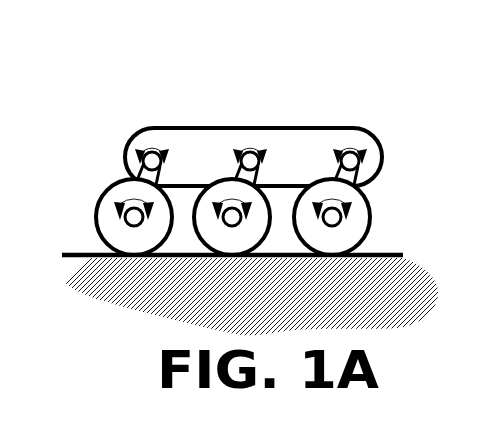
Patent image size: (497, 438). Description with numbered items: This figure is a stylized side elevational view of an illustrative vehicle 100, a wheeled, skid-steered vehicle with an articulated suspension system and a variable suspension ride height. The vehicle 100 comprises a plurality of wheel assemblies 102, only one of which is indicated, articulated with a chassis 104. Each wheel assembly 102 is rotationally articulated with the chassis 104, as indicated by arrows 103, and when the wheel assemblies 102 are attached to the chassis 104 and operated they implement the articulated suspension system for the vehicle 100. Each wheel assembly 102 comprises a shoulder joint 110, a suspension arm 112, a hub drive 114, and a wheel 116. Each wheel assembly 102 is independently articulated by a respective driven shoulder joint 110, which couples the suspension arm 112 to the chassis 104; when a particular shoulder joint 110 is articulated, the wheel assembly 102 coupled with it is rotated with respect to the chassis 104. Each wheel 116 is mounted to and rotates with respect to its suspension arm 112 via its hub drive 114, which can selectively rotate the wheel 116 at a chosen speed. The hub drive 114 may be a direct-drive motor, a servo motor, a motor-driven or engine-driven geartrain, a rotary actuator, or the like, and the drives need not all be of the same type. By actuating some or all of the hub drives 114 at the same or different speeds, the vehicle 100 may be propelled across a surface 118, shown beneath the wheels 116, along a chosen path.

The vehicle 100 is at (127, 27).
The wheel assembly 102 is at (88, 93).
The arrows 103 is at (156, 138).
The chassis 104 is at (381, 153).
The shoulder joint 110 is at (133, 143).
The suspension arm 112 is at (134, 176).
The hub drive 114 is at (123, 222).
The wheel 116 is at (100, 205).
The surface 118 is at (403, 252).